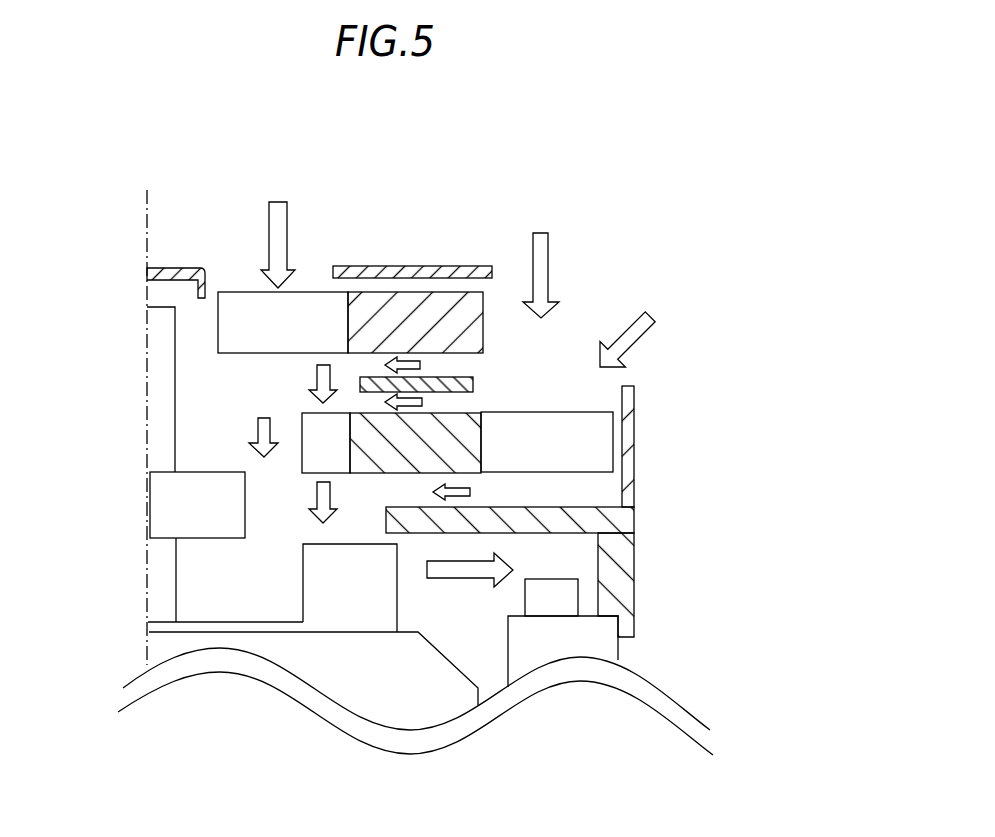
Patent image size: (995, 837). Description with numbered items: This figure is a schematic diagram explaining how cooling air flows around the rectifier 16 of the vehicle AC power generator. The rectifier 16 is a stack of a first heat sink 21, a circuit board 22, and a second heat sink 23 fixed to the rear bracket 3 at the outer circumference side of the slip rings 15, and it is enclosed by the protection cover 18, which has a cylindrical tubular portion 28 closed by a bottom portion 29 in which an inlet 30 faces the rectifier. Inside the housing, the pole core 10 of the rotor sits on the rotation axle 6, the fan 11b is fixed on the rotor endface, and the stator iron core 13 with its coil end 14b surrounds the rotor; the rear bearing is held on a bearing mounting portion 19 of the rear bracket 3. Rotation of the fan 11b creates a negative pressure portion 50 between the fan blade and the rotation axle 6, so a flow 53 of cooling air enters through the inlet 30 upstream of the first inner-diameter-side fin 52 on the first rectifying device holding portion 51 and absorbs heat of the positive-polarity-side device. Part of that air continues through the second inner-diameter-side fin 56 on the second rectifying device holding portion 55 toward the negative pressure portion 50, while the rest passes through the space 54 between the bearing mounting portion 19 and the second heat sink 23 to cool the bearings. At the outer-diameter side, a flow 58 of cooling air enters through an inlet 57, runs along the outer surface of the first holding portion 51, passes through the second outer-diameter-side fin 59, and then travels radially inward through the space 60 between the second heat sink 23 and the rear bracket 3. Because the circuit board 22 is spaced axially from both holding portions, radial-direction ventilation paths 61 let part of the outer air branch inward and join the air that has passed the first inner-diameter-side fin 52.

The rear bracket 3 is at (637, 522).
The rotation axle 6 is at (161, 565).
The pole core 10 is at (378, 673).
The fan 11b is at (337, 598).
The stator iron core 13 is at (595, 647).
The coil end 14b is at (562, 600).
The slip rings 15 is at (162, 372).
The rectifier 16 is at (423, 256).
The protection cover 18 is at (662, 404).
The bearing mounting portion 19 is at (183, 502).
The first heat sink 21 is at (475, 310).
The circuit board 22 is at (331, 335).
The second heat sink 23 is at (612, 437).
The cylindrical tubular portion 28 is at (633, 398).
The bottom portion 29 is at (363, 273).
The inlet 30 is at (227, 275).
The negative pressure portion 50 is at (247, 597).
The first rectifying device holding portion 51 is at (431, 279).
The first inner-diameter-side fin 52 is at (318, 302).
The flow of cooling air 53 is at (275, 207).
The space 54 is at (262, 475).
The second rectifying device holding portion 55 is at (460, 432).
The second inner-diameter-side fin 56 is at (312, 423).
The inlet 57 is at (633, 229).
The flow of cooling air 58 is at (545, 233).
The second outer-diameter-side fin 59 is at (602, 458).
The space 60 is at (602, 540).
The radial-direction ventilation path 61 is at (445, 363).